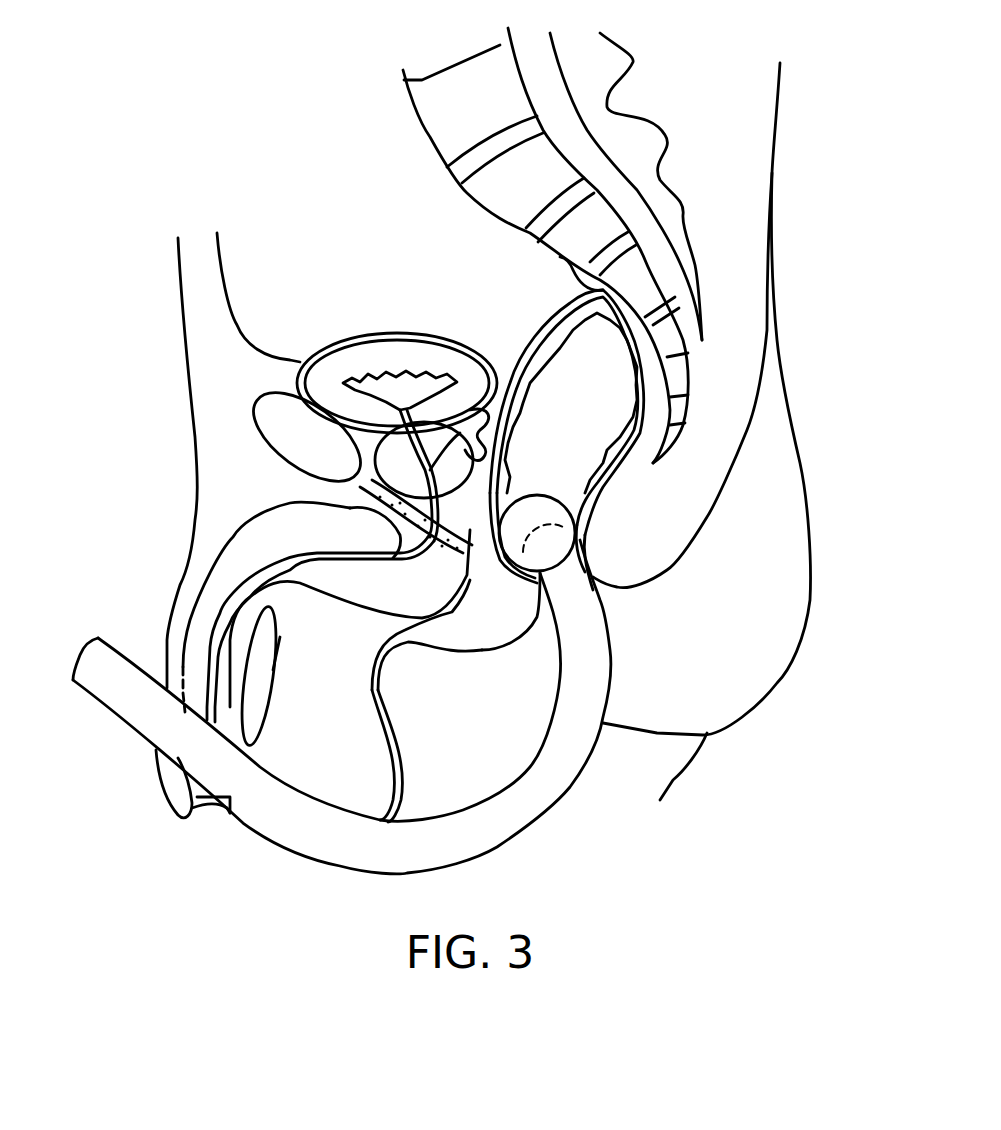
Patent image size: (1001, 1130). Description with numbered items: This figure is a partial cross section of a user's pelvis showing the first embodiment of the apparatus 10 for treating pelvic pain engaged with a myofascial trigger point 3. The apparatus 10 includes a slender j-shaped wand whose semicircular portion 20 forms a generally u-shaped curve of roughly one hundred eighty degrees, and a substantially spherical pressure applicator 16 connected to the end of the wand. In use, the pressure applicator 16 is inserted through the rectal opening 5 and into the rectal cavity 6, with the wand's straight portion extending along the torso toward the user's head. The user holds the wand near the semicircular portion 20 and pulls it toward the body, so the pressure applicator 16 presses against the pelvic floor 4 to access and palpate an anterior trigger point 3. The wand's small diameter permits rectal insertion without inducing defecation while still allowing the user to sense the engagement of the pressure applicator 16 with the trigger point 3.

The trigger point 3 is at (497, 532).
The pelvic floor 4 is at (508, 612).
The rectal opening 5 is at (590, 570).
The rectal cavity 6 is at (587, 407).
The apparatus 10 is at (447, 684).
The pressure applicator 16 is at (567, 527).
The semicircular portion 20 is at (537, 817).